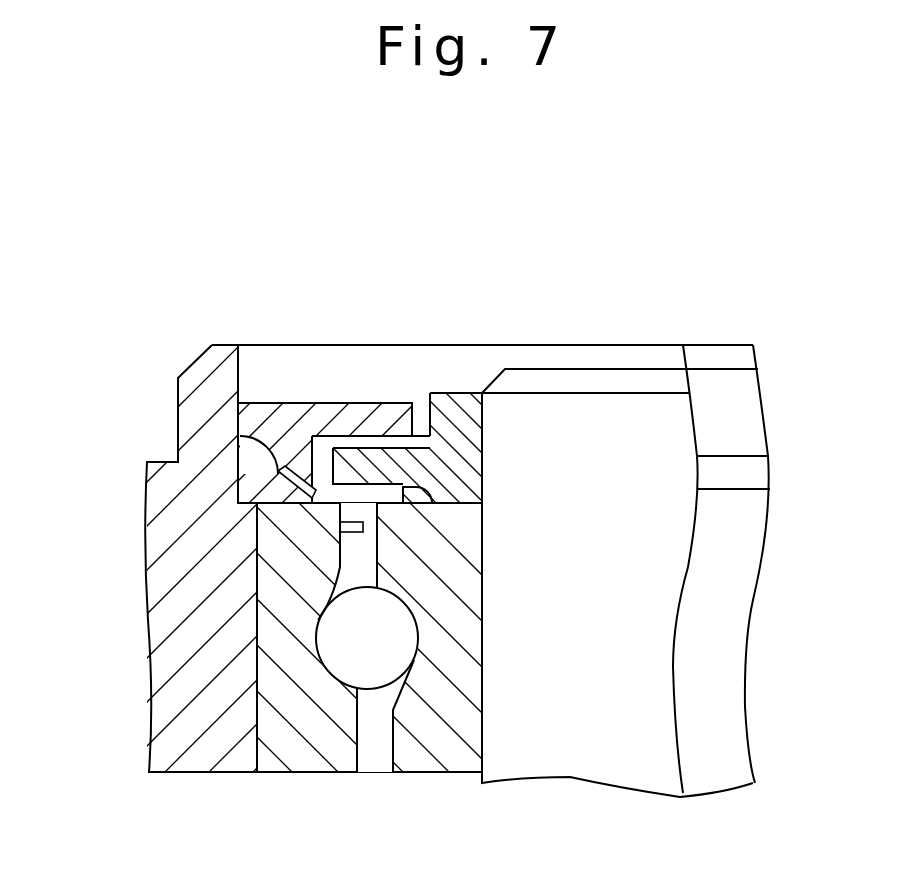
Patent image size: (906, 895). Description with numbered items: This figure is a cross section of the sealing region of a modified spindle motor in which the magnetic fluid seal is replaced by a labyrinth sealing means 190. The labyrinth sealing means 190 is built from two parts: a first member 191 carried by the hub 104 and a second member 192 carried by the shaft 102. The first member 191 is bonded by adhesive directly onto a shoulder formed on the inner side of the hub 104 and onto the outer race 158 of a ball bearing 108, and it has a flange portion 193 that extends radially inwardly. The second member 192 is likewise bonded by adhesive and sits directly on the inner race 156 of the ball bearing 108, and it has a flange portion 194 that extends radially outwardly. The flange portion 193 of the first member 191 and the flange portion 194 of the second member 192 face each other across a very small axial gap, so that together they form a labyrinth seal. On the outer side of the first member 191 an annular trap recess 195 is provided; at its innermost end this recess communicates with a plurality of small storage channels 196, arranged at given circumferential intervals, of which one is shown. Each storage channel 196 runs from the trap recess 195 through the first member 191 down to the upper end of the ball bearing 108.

The shaft 102 is at (565, 413).
The hub 104 is at (194, 792).
The ball bearing 108 is at (363, 790).
The inner race 156 is at (436, 745).
The outer race 158 is at (303, 745).
The labyrinth sealing means 190 is at (285, 354).
The first member 191 is at (259, 525).
The second member 192 is at (409, 503).
The flange portion 193 is at (373, 417).
The flange portion 194 is at (379, 477).
The annular trap recess 195 is at (258, 437).
The storage channel 196 is at (268, 496).